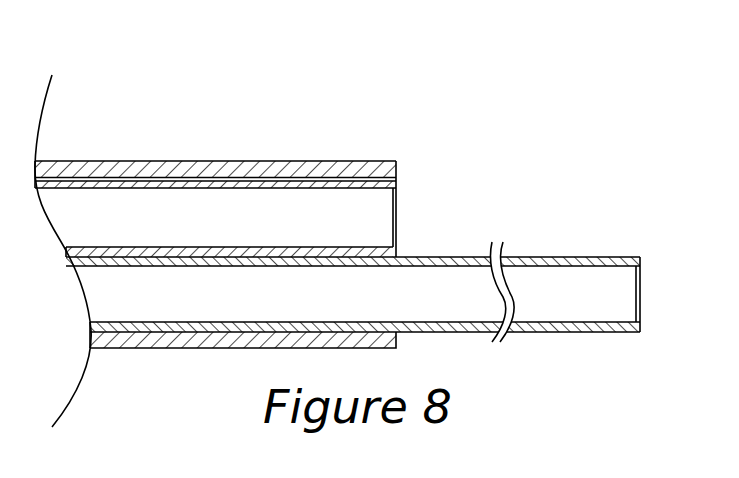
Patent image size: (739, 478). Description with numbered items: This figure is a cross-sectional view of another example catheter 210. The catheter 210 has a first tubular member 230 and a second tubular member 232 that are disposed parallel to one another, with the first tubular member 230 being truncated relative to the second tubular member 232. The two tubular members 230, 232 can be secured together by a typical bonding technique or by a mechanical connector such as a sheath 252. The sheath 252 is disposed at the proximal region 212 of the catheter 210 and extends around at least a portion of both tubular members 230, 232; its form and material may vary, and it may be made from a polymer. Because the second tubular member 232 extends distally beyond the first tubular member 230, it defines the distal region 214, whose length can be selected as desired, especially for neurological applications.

The catheter 210 is at (337, 220).
The proximal region 212 is at (215, 210).
The distal region 214 is at (353, 252).
The first tubular member 230 is at (149, 188).
The second tubular member 232 is at (353, 235).
The sheath 252 is at (374, 163).